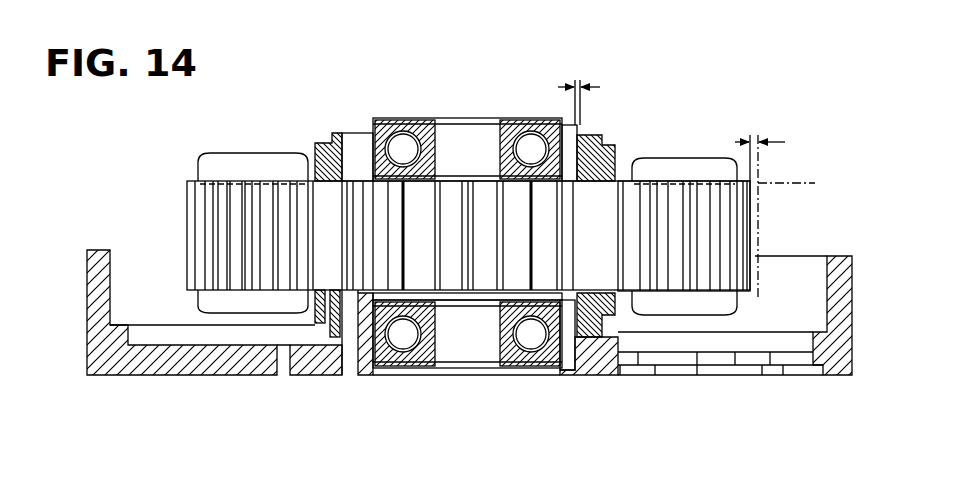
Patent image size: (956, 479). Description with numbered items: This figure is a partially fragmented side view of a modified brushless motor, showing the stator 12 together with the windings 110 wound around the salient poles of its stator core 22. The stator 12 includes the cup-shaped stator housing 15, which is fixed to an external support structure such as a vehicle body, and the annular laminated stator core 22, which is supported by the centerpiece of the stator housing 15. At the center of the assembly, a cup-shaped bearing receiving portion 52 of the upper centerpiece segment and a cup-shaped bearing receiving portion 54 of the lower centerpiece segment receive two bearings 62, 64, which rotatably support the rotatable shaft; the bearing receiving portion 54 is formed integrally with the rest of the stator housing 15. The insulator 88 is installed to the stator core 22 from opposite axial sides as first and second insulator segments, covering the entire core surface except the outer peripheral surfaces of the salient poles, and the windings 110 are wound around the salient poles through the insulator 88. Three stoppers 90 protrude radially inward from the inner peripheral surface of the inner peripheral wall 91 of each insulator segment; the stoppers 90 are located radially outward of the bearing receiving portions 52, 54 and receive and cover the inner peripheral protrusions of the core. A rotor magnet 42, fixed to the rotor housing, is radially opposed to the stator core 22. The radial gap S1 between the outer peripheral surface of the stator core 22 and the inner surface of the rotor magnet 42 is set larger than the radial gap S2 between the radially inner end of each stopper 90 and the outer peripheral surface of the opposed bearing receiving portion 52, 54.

The stator 12 is at (684, 272).
The stator housing 15 is at (87, 353).
The stator core 22 is at (538, 272).
The rotor magnet 42 is at (788, 183).
The bearing receiving portion 52 is at (352, 142).
The bearing receiving portion 54 is at (350, 330).
The bearing 62 is at (418, 118).
The bearing 64 is at (417, 370).
The insulator 88 is at (690, 182).
The stopper 90 is at (572, 152).
The inner peripheral wall 91 is at (615, 150).
The windings 110 is at (248, 153).
The radial gap S1 is at (782, 142).
The radial gap S2 is at (600, 87).